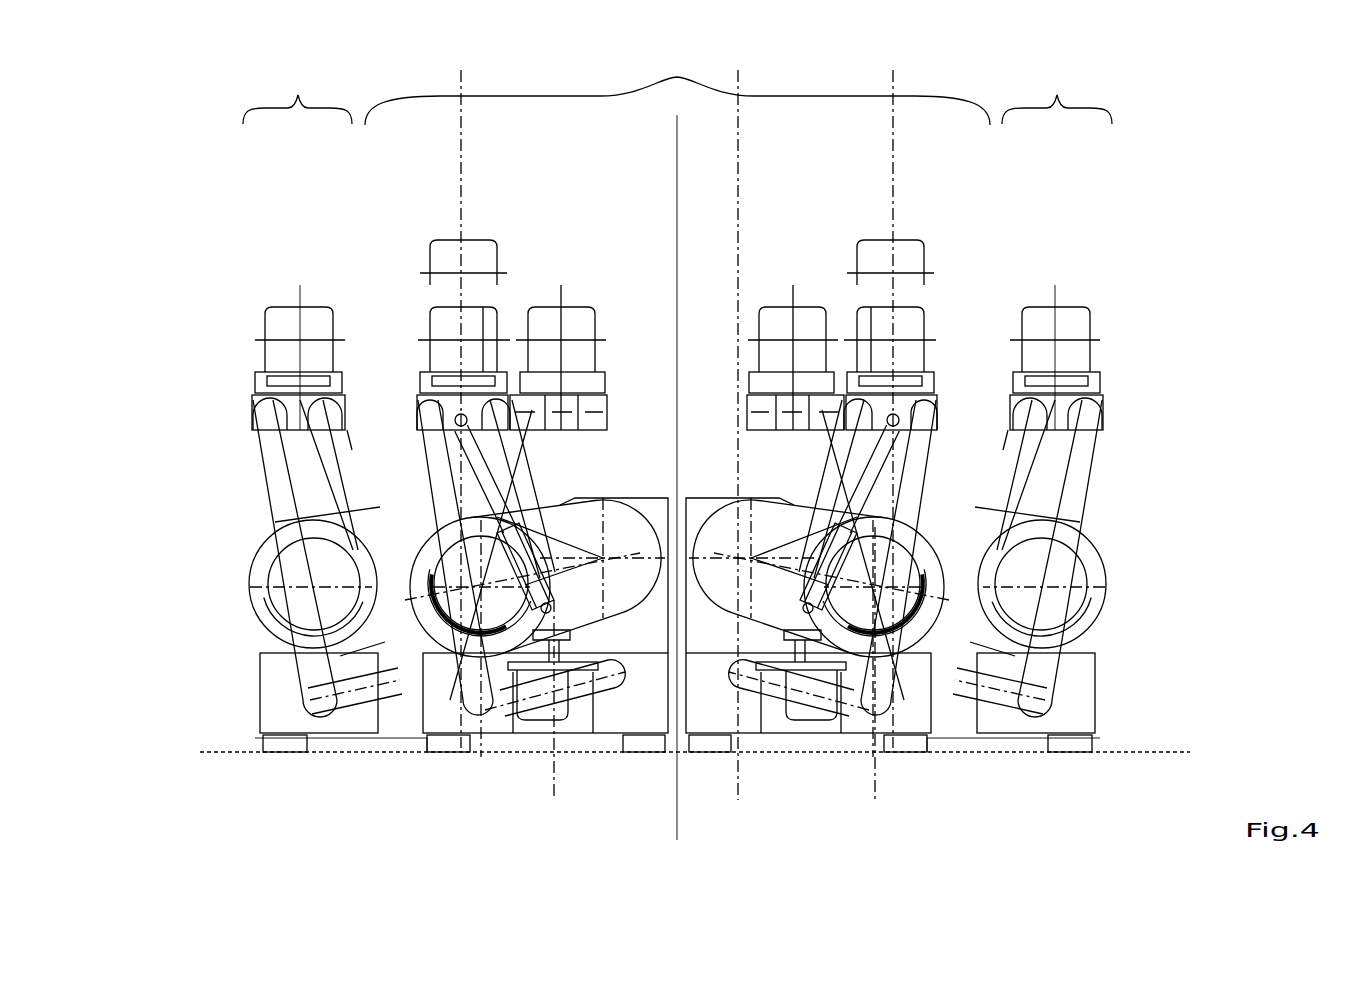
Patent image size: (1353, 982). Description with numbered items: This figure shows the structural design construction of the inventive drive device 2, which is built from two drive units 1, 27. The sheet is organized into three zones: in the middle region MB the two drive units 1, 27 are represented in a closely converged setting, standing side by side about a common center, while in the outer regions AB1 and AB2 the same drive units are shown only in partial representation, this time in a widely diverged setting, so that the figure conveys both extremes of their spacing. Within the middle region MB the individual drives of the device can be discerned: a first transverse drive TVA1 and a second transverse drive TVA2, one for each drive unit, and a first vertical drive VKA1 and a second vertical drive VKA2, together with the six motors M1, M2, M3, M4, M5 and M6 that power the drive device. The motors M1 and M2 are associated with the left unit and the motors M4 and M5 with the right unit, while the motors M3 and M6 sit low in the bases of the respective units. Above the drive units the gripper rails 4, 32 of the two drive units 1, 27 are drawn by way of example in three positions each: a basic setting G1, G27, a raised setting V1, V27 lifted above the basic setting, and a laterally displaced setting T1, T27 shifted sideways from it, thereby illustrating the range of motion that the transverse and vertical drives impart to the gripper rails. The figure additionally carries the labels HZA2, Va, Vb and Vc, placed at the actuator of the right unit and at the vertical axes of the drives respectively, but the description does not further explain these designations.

The drive unit 1 is at (223, 300).
The drive device 2 is at (943, 190).
The gripper rail 4 is at (277, 315).
The drive unit 27 is at (947, 233).
The gripper rail 32 is at (918, 315).
The raised setting V1 is at (497, 250).
The basic setting G1 is at (495, 317).
The laterally displaced setting T1 is at (610, 340).
The raised setting V27 is at (860, 250).
The basic setting G27 is at (860, 318).
The laterally displaced setting T27 is at (762, 355).
The hydraulic cylinder actuator HZA2 is at (467, 478).
The first transverse drive TVA1 is at (567, 483).
The second transverse drive TVA2 is at (792, 483).
The motor M1 is at (647, 507).
The motor M2 is at (428, 567).
The motor M3 is at (540, 728).
The motor M4 is at (712, 507).
The motor M5 is at (925, 567).
The motor M6 is at (818, 730).
The first vertical drive VKA1 is at (632, 617).
The second vertical drive VKA2 is at (724, 617).
The velocity / axis a Va is at (738, 128).
The velocity / axis b Vb is at (893, 78).
The velocity / axis c Vc is at (461, 78).
The middle region MB is at (677, 87).
The outer region AB1 is at (1057, 95).
The outer region AB2 is at (297, 95).